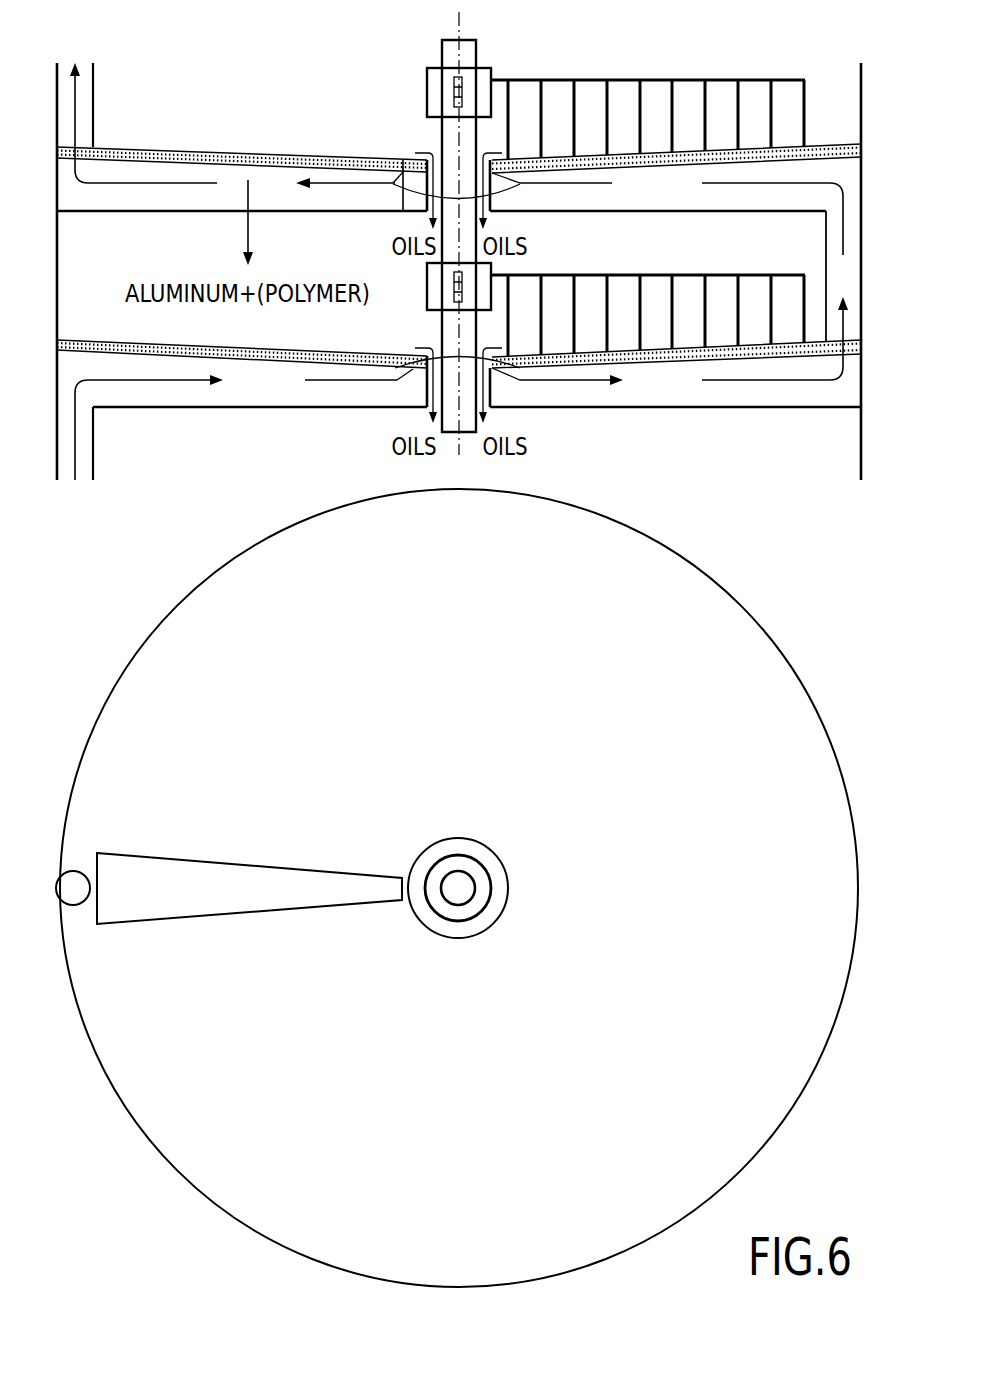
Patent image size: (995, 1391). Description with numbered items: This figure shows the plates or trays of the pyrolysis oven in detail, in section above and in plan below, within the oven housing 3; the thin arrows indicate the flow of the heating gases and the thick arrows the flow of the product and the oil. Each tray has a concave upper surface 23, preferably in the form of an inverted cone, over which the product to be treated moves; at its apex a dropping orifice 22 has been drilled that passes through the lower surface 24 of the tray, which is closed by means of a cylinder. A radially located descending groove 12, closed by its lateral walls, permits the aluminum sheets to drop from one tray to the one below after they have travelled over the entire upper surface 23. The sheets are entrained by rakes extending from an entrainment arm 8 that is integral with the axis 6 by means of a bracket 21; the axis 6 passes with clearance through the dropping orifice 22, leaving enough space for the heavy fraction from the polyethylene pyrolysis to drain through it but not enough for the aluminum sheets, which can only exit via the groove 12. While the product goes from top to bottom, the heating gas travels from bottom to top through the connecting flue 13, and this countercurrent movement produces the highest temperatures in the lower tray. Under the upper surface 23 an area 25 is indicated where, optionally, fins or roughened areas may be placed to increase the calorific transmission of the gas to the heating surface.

The oven housing 3 is at (862, 165).
The axis 6 is at (463, 52).
The entrainment arm 8 is at (596, 80).
The descending groove 12 is at (234, 180).
The connecting flue 13 is at (94, 113).
The bracket 21 is at (438, 89).
The dropping orifice 22 is at (433, 150).
The upper surface of the tray 23 is at (650, 160).
The lower surface of the tray 24 is at (598, 212).
The optional fins or roughened area 25 is at (675, 172).